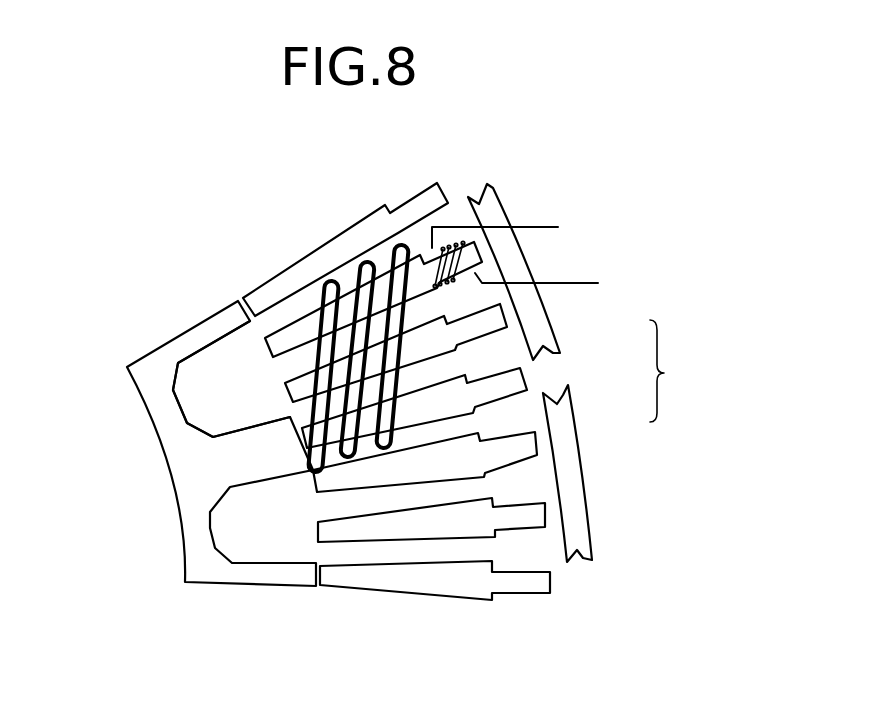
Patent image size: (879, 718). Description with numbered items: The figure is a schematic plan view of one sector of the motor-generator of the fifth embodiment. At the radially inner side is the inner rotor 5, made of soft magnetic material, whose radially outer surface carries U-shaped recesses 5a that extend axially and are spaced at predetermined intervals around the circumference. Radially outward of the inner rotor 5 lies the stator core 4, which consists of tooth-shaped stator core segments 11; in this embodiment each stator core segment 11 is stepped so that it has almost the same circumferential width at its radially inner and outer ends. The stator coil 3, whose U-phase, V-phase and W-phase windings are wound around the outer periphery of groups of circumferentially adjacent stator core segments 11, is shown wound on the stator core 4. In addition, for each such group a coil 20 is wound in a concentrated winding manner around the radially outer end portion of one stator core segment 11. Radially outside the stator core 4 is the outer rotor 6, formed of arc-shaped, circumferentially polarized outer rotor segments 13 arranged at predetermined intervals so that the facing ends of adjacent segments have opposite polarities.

The stator coil 3 is at (327, 301).
The stator core 4 is at (424, 598).
The inner rotor 5 is at (150, 374).
The recess 5a is at (205, 385).
The outer rotor 6 is at (666, 371).
The stator core segment 11 is at (293, 339).
The outer rotor segment 13 is at (543, 335).
The coil 20 is at (545, 224).